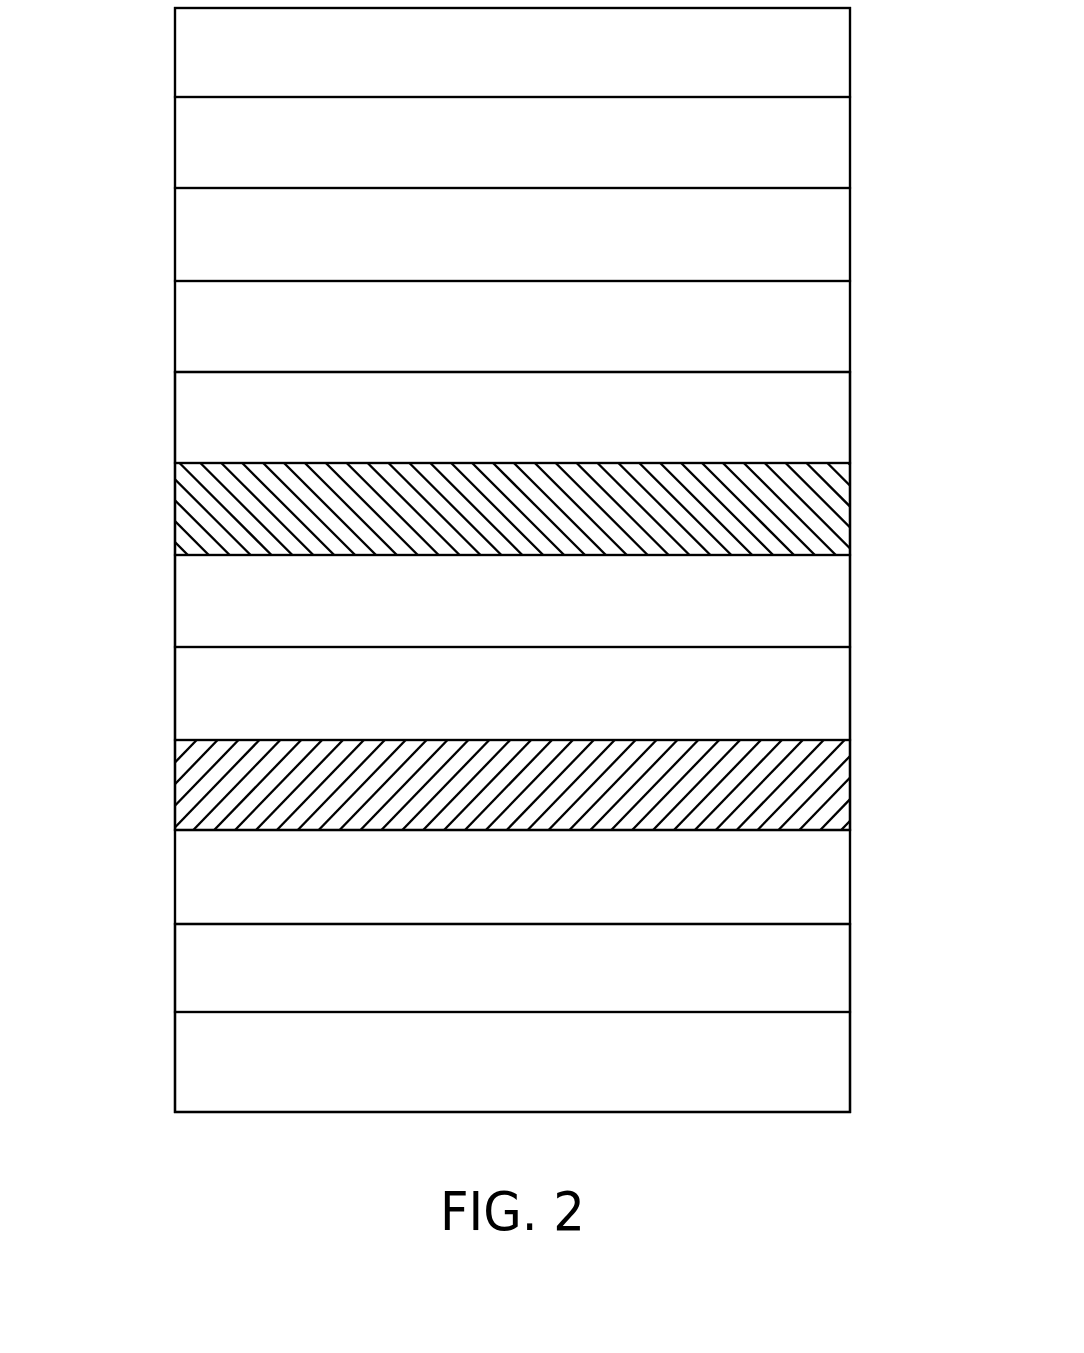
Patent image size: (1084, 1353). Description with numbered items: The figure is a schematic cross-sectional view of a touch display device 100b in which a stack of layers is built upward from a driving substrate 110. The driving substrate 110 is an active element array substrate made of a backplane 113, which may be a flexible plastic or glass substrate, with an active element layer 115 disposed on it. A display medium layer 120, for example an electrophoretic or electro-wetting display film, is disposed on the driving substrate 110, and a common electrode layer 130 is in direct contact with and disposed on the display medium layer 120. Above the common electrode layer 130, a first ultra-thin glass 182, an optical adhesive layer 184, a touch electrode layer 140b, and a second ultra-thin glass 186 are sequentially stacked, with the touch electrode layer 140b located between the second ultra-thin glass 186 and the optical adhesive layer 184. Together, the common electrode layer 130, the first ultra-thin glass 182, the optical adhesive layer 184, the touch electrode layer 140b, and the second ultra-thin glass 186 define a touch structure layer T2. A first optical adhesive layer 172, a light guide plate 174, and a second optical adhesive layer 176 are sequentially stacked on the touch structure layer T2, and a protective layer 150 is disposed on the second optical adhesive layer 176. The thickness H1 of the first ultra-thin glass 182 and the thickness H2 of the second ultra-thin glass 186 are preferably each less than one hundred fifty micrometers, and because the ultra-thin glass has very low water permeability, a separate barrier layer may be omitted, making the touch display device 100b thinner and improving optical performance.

The touch display device 100b is at (958, 1156).
The driving substrate 110 is at (99, 960).
The backplane 113 is at (182, 1067).
The active element layer 115 is at (182, 974).
The display medium layer 120 is at (182, 878).
The common electrode layer 130 is at (182, 787).
The touch electrode layer 140b is at (180, 510).
The protective layer 150 is at (182, 52).
The first optical adhesive layer 172 is at (182, 313).
The light guide plate 174 is at (182, 233).
The second optical adhesive layer 176 is at (182, 135).
The first ultra-thin glass 182 is at (182, 694).
The optical adhesive layer 184 is at (182, 599).
The second ultra-thin glass 186 is at (182, 414).
The touch structure layer T2 is at (99, 398).
The thickness of the first ultra-thin glass H1 is at (853, 647).
The thickness of the second ultra-thin glass H2 is at (853, 372).